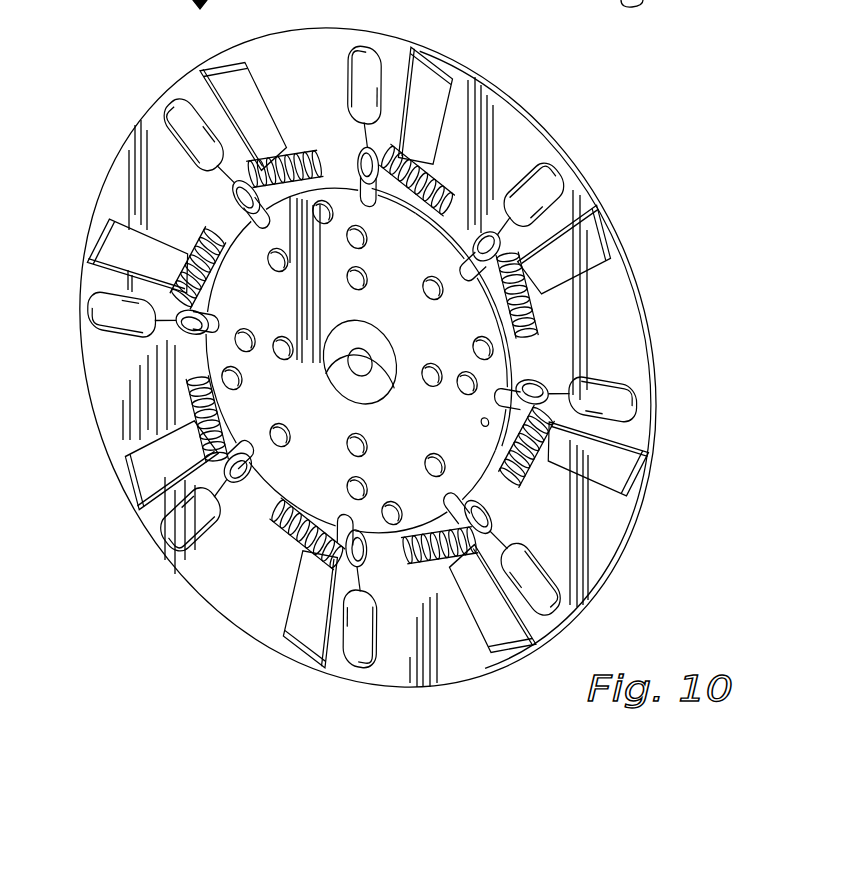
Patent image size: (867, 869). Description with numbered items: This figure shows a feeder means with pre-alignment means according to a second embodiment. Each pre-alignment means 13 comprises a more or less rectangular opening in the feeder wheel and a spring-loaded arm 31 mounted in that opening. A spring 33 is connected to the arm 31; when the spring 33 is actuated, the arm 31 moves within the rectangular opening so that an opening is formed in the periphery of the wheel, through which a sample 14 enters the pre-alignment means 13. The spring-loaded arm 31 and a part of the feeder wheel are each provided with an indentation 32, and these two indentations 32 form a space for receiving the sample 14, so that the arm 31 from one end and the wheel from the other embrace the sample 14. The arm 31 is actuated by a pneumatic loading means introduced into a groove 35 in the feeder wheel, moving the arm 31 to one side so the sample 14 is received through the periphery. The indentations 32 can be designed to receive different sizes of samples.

The pre-alignment means 13 is at (187, 93).
The sample 14 is at (343, 63).
The spring-loaded arm 31 is at (564, 217).
The indentation 32 is at (533, 187).
The spring 33 is at (533, 290).
The groove 35 is at (377, 173).